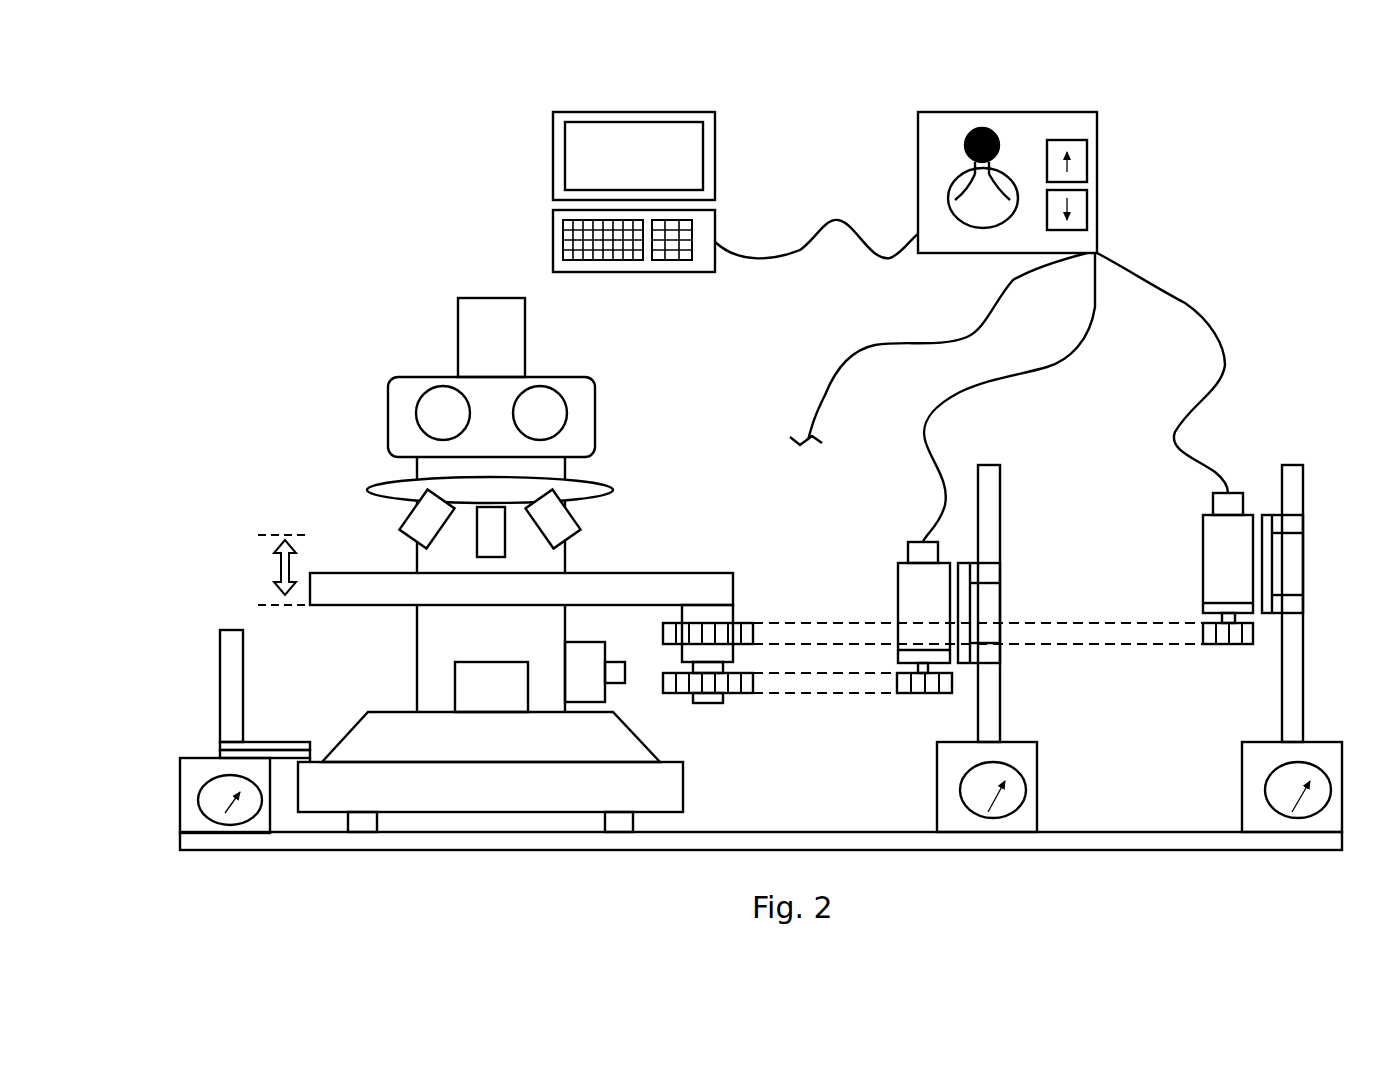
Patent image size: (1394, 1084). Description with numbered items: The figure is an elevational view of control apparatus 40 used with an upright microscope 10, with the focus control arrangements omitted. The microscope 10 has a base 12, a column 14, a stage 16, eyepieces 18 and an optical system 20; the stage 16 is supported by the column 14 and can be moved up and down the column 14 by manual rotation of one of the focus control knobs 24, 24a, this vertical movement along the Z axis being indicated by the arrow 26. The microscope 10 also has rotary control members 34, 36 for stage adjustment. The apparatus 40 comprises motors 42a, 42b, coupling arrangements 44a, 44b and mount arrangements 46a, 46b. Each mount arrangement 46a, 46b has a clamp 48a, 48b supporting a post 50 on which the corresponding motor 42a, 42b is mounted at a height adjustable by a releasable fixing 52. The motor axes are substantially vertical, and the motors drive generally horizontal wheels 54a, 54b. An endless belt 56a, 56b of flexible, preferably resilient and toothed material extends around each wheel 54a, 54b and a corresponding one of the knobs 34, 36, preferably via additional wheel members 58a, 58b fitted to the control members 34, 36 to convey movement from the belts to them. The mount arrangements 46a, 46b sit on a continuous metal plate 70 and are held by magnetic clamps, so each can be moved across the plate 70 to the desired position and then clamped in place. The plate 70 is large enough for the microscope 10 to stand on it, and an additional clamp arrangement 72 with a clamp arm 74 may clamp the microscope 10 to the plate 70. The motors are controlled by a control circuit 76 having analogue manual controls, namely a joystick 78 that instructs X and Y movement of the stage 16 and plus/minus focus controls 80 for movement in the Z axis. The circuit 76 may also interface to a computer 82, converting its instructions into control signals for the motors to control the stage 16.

The microscope 10 is at (462, 498).
The base 12 is at (433, 802).
The column 14 is at (553, 562).
The stage 16 is at (360, 573).
The eyepieces 18 is at (435, 428).
The optical system 20 is at (592, 488).
The focus control knob 24 is at (610, 660).
The focus control knob 24a is at (573, 665).
The Z axis arrow 26 is at (277, 575).
The rotary control member 34 is at (708, 613).
The inner control knob 36 is at (698, 703).
The apparatus 40 is at (983, 572).
The motor 42a is at (1203, 528).
The motor 42b is at (897, 573).
The coupling arrangement 44a is at (1103, 622).
The coupling arrangement 44b is at (813, 693).
The mount arrangement 46a is at (1255, 715).
The mount arrangement 46b is at (1049, 716).
The clamp 48a is at (1257, 812).
The clamp 48b is at (1025, 813).
The post 50 is at (1002, 518).
The releasable fixing 52 is at (965, 603).
The wheel 54a is at (1242, 647).
The wheel 54b is at (933, 697).
The endless belt 56a is at (1163, 633).
The endless belt 56b is at (860, 683).
The wheel member 58a is at (740, 622).
The wheel member 58b is at (732, 693).
The metal plate 70 is at (750, 849).
The clamp arrangement 72 is at (200, 822).
The clamp arm 74 is at (285, 738).
The control circuit 76 is at (1009, 316).
The joystick 78 is at (932, 197).
The focus controls 80 is at (1087, 160).
The computer 82 is at (552, 152).